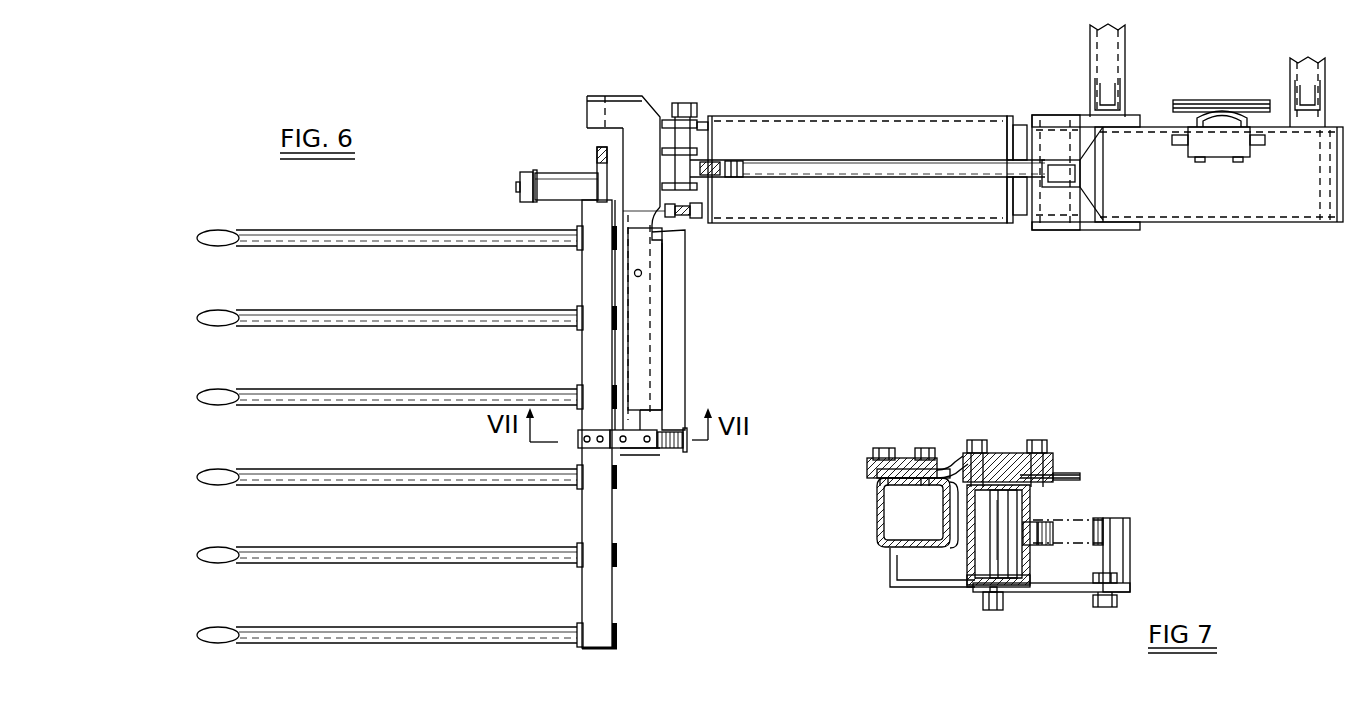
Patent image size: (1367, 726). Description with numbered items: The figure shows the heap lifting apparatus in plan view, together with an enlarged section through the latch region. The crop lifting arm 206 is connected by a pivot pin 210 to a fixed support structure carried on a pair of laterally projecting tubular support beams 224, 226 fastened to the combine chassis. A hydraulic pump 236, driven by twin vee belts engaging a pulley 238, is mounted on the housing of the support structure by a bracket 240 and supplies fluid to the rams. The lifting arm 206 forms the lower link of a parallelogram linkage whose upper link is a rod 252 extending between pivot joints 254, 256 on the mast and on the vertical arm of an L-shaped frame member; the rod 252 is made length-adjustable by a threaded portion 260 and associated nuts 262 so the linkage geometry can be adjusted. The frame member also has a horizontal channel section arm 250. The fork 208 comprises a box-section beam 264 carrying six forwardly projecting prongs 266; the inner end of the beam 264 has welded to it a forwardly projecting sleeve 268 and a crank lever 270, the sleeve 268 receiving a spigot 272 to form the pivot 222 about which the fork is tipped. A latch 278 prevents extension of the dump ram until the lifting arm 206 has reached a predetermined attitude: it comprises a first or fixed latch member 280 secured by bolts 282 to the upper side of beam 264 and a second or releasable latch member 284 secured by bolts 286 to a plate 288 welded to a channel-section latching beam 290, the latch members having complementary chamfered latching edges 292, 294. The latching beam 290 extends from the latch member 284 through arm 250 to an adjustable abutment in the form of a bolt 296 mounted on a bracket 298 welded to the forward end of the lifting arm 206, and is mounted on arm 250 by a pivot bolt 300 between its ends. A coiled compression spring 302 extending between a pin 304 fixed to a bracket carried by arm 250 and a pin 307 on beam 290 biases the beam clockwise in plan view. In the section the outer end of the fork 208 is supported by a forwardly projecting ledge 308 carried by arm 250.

In FIG. 6, the crop lifting arm 206 is at (913, 213).
In FIG. 6, the fork 208 is at (617, 532).
In FIG. 6, the pivot pin 210 is at (1050, 113).
In FIG. 6, the pivot 222 is at (533, 173).
In FIG. 6, the tubular support beam 224 is at (1100, 60).
In FIG. 6, the tubular support beam 226 is at (1307, 70).
In FIG. 6, the hydraulic pump 236 is at (1218, 153).
In FIG. 6, the pulley 238 is at (1247, 102).
In FIG. 6, the bracket 240 is at (1195, 102).
In FIG. 6, the horizontal channel section arm 250 is at (642, 348).
In FIG. 7, the horizontal channel section arm 250 is at (1068, 473).
In FIG. 6, the rod 252 is at (842, 177).
In FIG. 6, the pivot joint 254 is at (1048, 195).
In FIG. 6, the pivot joint 256 is at (699, 102).
In FIG. 6, the threaded portion 260 is at (717, 160).
In FIG. 6, the nuts 262 is at (727, 180).
In FIG. 6, the box-section beam 264 is at (585, 363).
In FIG. 7, the box-section beam 264 is at (878, 522).
In FIG. 6, the prongs 266 is at (338, 470).
In FIG. 6, the sleeve 268 is at (560, 190).
In FIG. 6, the crank lever 270 is at (598, 165).
In FIG. 6, the spigot 272 is at (519, 185).
In FIG. 6, the latch 278 is at (643, 455).
In FIG. 7, the latch 278 is at (1102, 472).
In FIG. 6, the first or fixed latch member 280 is at (593, 449).
In FIG. 7, the first or fixed latch member 280 is at (880, 498).
In FIG. 7, the bolts 282 is at (913, 458).
In FIG. 6, the second or releasable latch member 284 is at (623, 450).
In FIG. 7, the second or releasable latch member 284 is at (993, 455).
In FIG. 7, the bolts 286 is at (968, 440).
In FIG. 7, the plate 288 is at (1013, 455).
In FIG. 6, the latching beam 290 is at (650, 295).
In FIG. 7, the latching beam 290 is at (1008, 588).
In FIG. 7, the chamfered latching edge 292 is at (914, 504).
In FIG. 7, the chamfered latching edge 294 is at (952, 462).
In FIG. 6, the bolt 296 is at (663, 228).
In FIG. 6, the bracket 298 is at (682, 215).
In FIG. 6, the pivot bolt 300 is at (634, 273).
In FIG. 7, the pivot bolt 300 is at (992, 555).
In FIG. 6, the coiled compression spring 302 is at (667, 455).
In FIG. 7, the coiled compression spring 302 is at (1108, 520).
In FIG. 7, the pin 304 is at (1112, 537).
In FIG. 7, the pin 307 is at (1045, 522).
In FIG. 7, the ledge 308 is at (920, 552).